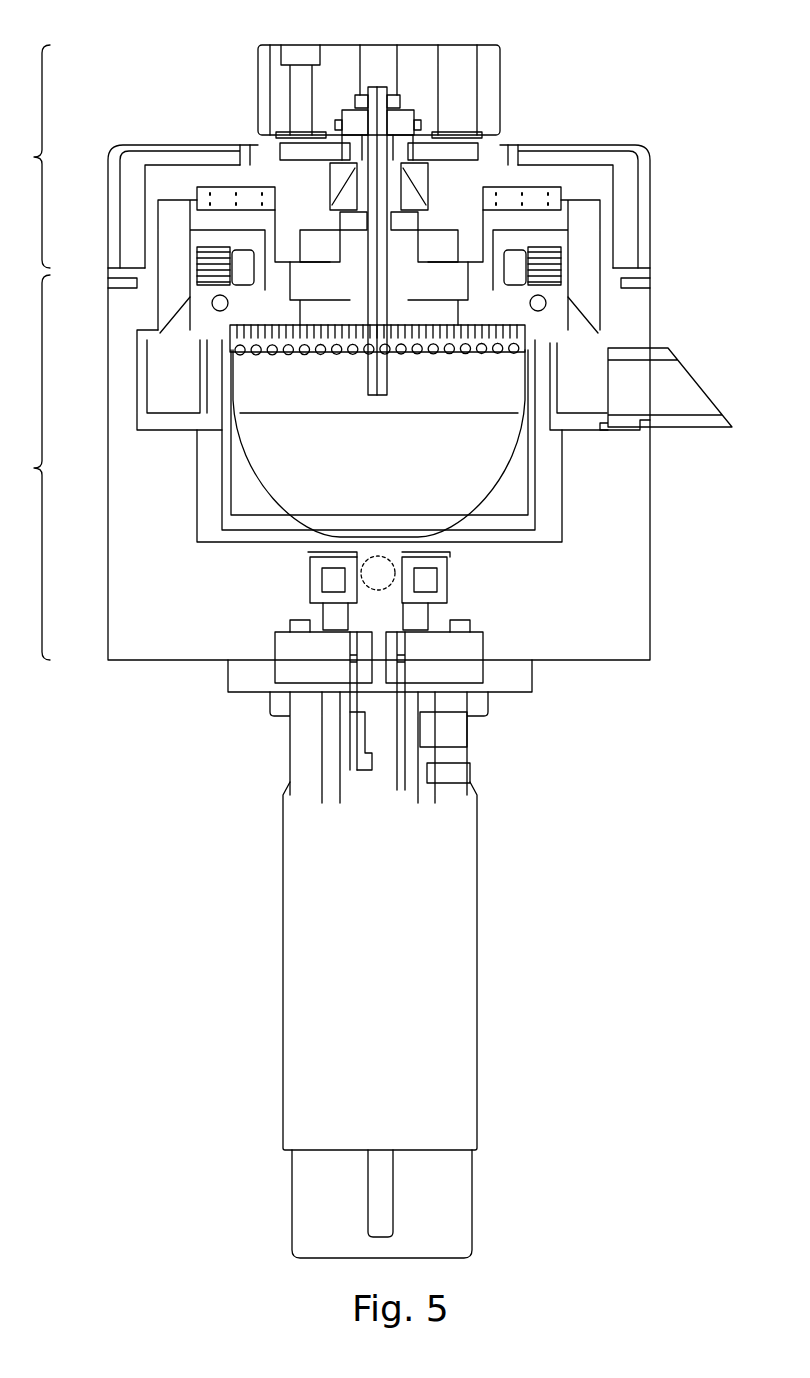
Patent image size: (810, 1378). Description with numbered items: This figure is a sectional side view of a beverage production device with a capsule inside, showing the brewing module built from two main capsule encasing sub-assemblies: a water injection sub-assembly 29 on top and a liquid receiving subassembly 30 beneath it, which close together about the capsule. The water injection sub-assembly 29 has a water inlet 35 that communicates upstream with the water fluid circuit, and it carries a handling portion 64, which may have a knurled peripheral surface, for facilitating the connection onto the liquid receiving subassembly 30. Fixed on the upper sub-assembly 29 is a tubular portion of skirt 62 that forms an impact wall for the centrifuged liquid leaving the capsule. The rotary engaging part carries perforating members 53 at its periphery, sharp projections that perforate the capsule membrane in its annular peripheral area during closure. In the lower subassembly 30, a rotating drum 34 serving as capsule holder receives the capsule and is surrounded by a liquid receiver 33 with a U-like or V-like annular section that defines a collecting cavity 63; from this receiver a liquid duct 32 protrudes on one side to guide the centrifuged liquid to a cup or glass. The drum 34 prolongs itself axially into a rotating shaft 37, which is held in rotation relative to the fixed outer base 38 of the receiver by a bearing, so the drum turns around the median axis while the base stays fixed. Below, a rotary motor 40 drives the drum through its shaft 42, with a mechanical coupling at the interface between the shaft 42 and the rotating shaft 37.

The water injection sub-assembly 29 is at (252, 156).
The liquid receiving subassembly 30 is at (27, 467).
The liquid duct 32 is at (688, 428).
The liquid receiver 33 is at (165, 415).
The rotating drum 34 is at (222, 505).
The water inlet 35 is at (395, 97).
The rotating shaft 37 is at (370, 590).
The outer base 38 is at (158, 637).
The rotary motor 40 is at (300, 935).
The shaft of the motor 42 is at (372, 737).
The perforating members 53 is at (272, 353).
The tubular portion of skirt 62 is at (147, 227).
The collecting cavity 63 is at (598, 392).
The handling portion 64 is at (133, 157).